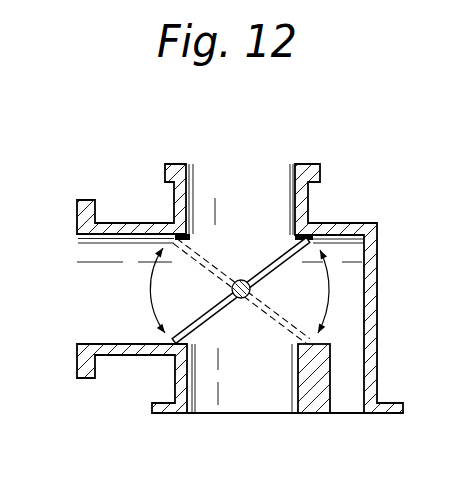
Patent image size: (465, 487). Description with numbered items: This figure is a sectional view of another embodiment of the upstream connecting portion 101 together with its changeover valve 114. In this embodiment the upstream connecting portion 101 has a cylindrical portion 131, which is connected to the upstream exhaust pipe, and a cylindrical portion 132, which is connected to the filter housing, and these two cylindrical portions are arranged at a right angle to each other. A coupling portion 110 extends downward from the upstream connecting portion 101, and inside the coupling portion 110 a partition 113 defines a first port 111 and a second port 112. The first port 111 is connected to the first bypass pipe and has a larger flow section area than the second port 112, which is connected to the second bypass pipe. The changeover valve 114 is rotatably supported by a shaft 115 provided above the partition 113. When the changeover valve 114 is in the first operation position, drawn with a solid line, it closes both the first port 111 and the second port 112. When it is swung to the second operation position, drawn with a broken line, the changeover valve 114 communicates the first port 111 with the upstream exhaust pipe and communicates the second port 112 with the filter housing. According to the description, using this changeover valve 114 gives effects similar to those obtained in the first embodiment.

The upstream connecting portion 101 is at (221, 314).
The coupling portion 110 is at (174, 380).
The first port 111 is at (216, 400).
The second port 112 is at (353, 403).
The partition 113 is at (309, 413).
The changeover valve 114 is at (288, 253).
The shaft 115 is at (232, 289).
The cylindrical portion 131 is at (113, 239).
The cylindrical portion 132 is at (176, 197).